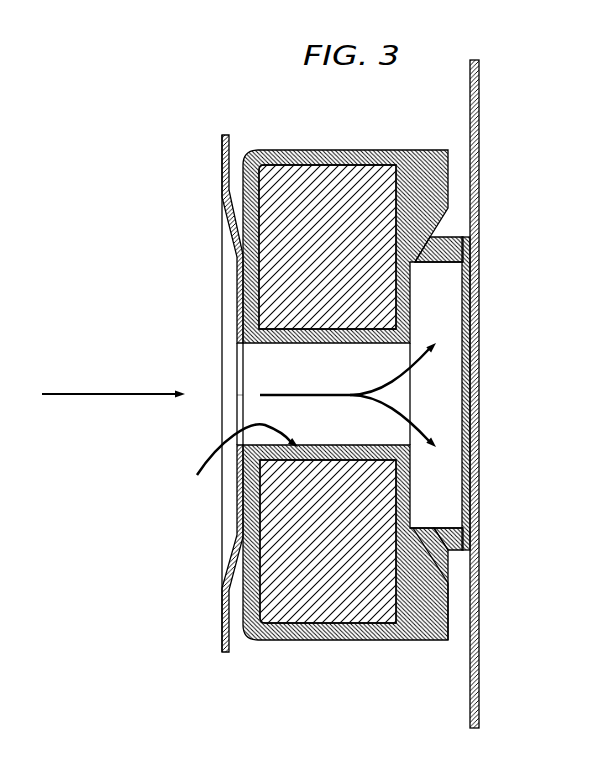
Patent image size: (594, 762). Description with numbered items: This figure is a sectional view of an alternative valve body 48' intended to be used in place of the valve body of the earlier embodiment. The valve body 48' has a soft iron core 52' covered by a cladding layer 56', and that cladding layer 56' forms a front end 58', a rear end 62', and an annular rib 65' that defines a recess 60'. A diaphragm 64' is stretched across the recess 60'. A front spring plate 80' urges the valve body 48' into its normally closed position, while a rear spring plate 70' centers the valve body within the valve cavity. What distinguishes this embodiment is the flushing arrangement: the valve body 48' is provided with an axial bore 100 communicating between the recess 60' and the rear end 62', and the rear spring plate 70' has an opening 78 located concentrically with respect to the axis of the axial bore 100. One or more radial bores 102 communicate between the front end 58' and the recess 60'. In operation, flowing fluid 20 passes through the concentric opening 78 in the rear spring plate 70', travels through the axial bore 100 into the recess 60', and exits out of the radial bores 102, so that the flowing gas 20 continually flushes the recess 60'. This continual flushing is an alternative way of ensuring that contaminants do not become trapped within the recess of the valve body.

The valve body 48' is at (358, 175).
The rear spring plate 70' is at (252, 375).
The radial bores 102 is at (424, 241).
The annular rib 65' is at (439, 176).
The front spring plate 80' is at (522, 394).
The diaphragm 64' is at (509, 393).
The flowing fluid 20 is at (270, 393).
The opening 78 is at (238, 405).
The axial bore 100 is at (237, 462).
The recess 60' is at (488, 530).
The rear end 62' is at (234, 576).
The soft iron core 52' is at (328, 583).
The cladding layer 56' is at (345, 529).
The front end 58' is at (441, 644).